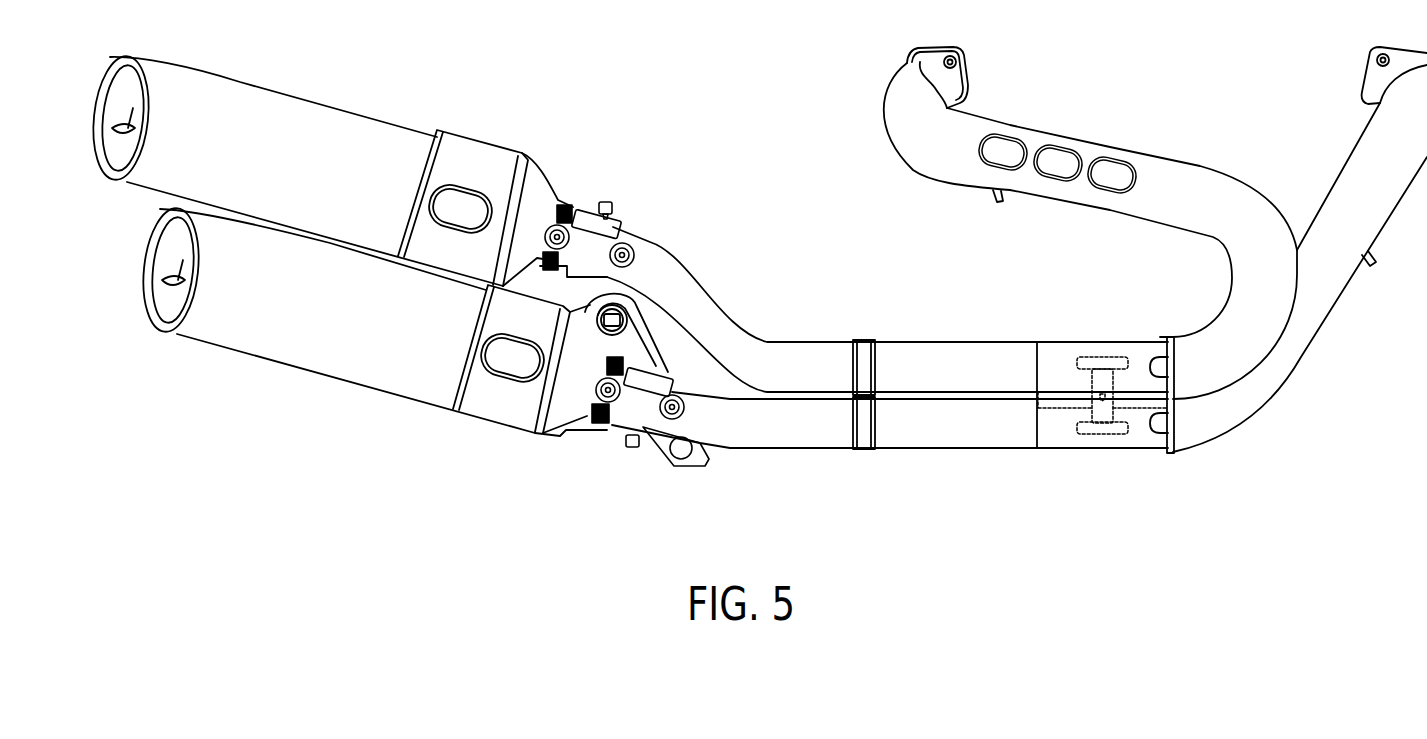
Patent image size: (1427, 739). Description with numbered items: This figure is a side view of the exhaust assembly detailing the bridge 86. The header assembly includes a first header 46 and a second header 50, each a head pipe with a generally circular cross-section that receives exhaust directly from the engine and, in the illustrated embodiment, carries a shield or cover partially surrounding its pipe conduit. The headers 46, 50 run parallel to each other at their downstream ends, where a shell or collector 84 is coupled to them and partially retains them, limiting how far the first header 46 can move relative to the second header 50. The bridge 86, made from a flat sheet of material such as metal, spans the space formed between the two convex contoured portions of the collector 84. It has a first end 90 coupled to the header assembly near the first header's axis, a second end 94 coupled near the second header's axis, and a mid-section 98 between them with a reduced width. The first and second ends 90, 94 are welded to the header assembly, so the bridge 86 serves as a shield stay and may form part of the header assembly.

The first header 46 is at (925, 147).
The second header 50 is at (1288, 358).
The collector 84 is at (940, 373).
The bridge 86 is at (1097, 358).
The first end 90 is at (1110, 358).
The second end 94 is at (1105, 434).
The mid-section 98 is at (1113, 383).